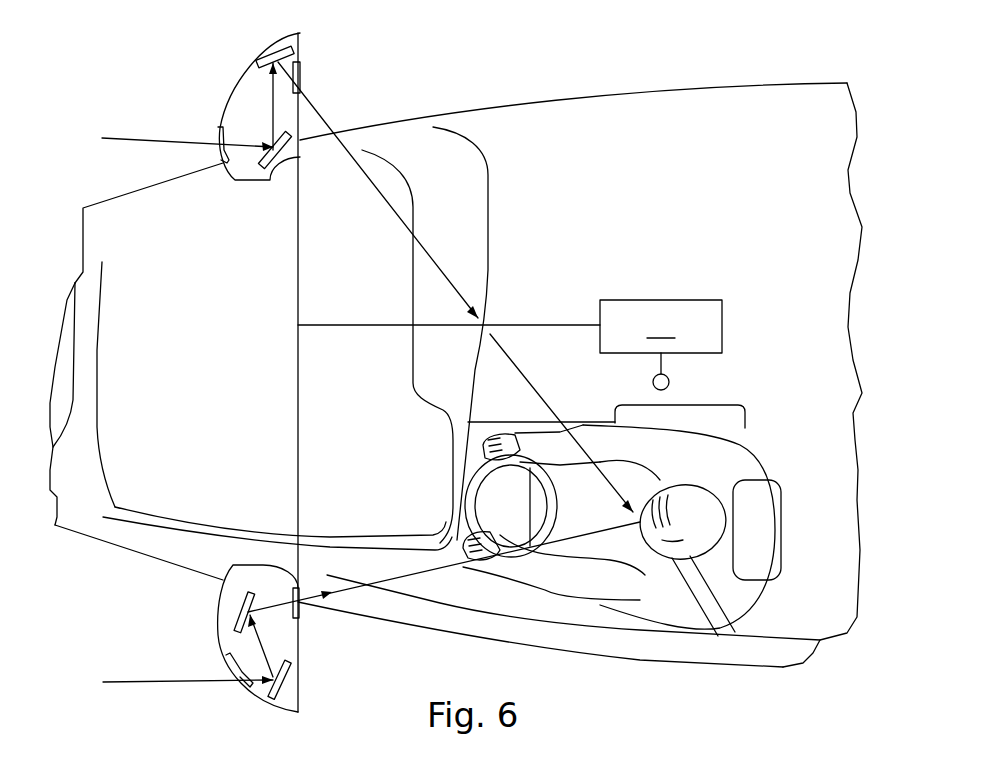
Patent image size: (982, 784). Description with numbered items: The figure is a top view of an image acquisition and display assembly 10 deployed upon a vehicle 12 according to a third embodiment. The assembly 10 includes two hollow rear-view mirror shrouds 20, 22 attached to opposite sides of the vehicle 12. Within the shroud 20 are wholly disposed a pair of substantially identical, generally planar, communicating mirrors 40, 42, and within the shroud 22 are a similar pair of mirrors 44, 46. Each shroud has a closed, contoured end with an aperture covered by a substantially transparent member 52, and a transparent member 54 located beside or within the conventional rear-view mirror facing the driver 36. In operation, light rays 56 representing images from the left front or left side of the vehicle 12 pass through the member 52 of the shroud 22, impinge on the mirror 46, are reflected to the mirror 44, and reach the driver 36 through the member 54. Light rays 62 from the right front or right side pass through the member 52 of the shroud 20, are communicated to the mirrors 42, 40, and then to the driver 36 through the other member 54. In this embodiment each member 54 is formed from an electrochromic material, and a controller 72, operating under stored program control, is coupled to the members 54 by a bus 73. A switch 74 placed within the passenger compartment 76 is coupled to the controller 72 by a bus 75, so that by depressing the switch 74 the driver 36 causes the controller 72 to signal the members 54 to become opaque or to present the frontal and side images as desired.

The image acquisition and display assembly 10 is at (580, 280).
The vehicle 12 is at (647, 663).
The rear-view mirror shroud 20 is at (270, 42).
The rear-view mirror shroud 22 is at (288, 712).
The driver 36 is at (723, 472).
The first mirror 40 is at (287, 43).
The second mirror 42 is at (284, 160).
The mirror 44 is at (243, 608).
The mirror 46 is at (287, 687).
The transparent member 52 is at (218, 132).
The transparent member 54 is at (301, 68).
The light rays 56 is at (148, 683).
The light rays 62 is at (160, 138).
The controller 72 is at (661, 326).
The bus 73 is at (327, 323).
The switch 74 is at (669, 384).
The bus 75 is at (657, 362).
The passenger compartment 76 is at (799, 568).